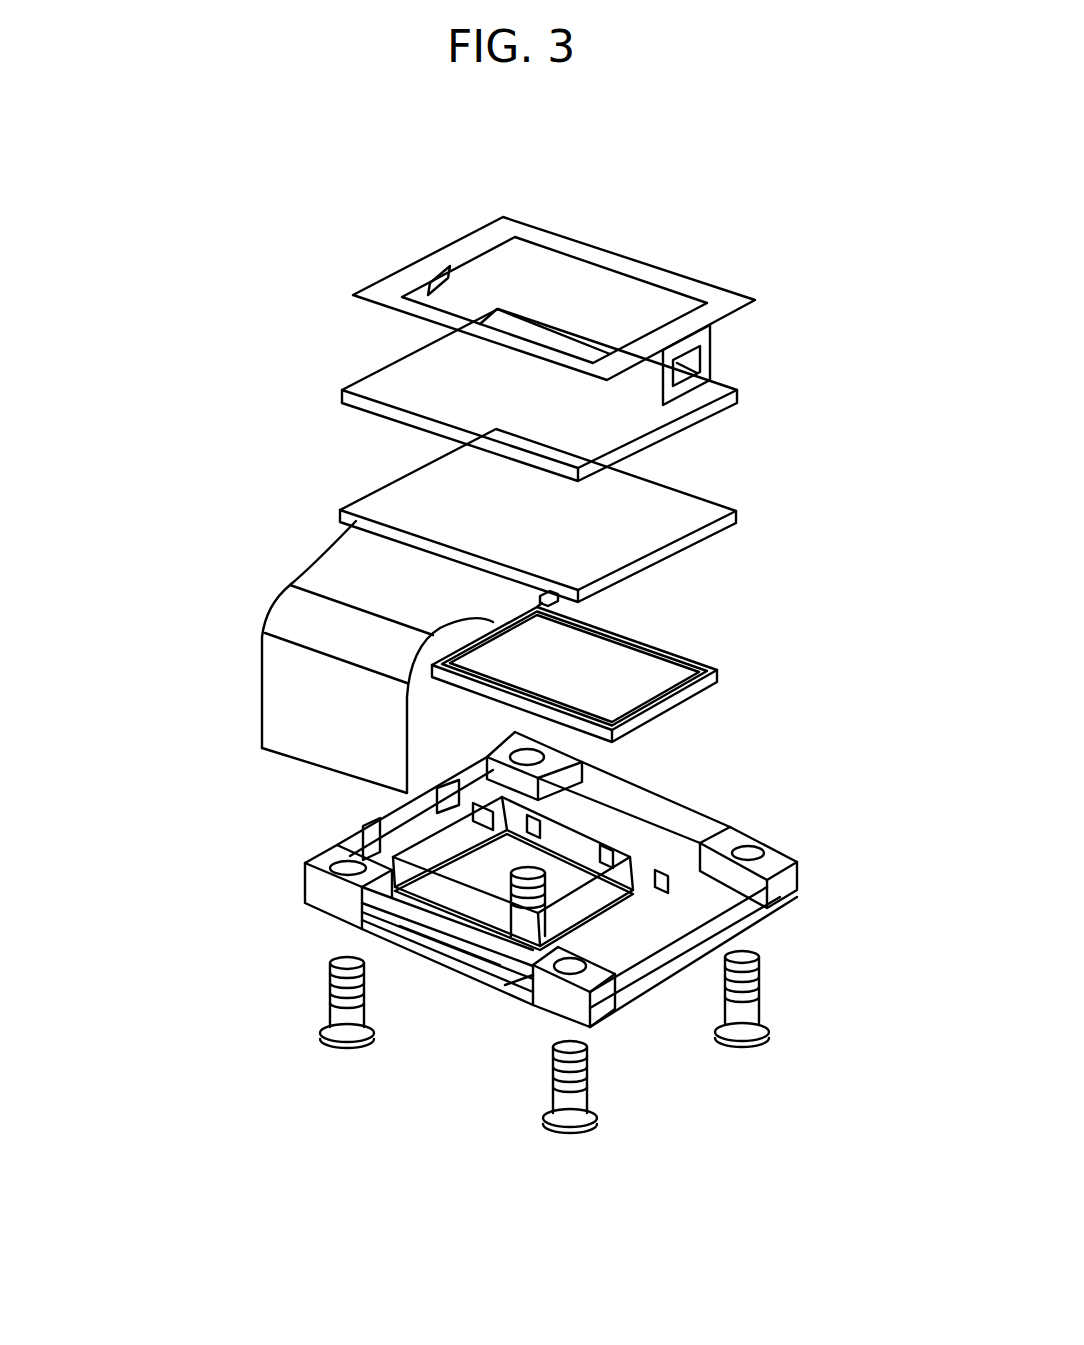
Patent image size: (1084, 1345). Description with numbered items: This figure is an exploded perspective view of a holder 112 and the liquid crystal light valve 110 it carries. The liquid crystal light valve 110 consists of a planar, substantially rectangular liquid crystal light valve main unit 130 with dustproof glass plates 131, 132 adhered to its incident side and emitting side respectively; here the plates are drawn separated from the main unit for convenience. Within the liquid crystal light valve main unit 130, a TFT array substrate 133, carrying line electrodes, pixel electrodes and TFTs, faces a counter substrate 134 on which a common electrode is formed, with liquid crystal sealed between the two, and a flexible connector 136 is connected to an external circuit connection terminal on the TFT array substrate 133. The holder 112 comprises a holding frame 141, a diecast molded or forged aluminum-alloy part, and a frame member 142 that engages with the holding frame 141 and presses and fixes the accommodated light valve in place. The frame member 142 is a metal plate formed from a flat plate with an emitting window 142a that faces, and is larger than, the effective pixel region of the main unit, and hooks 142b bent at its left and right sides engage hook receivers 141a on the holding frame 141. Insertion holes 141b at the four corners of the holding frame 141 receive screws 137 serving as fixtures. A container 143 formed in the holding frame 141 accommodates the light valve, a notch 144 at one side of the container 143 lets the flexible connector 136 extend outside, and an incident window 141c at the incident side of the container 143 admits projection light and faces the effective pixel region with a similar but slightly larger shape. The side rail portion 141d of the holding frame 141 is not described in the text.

The liquid crystal light valve 110 is at (882, 662).
The holder 112 is at (108, 700).
The liquid crystal light valve main unit 130 is at (702, 553).
The dustproof glass plate 131 is at (712, 658).
The dustproof glass plate 132 is at (727, 383).
The TFT array substrate 133 is at (683, 503).
The counter substrate 134 is at (562, 598).
The flexible connector 136 is at (338, 560).
The screw 137 is at (762, 995).
The holding frame 141 is at (303, 873).
The hook receiver 141a is at (700, 957).
The insertion hole 141b is at (545, 757).
The incident window 141c is at (685, 823).
The side rail 141d is at (467, 905).
The frame member 142 is at (415, 262).
The emitting window 142a is at (603, 297).
The hook 142b is at (462, 247).
The container 143 is at (597, 890).
The notch 144 is at (515, 962).